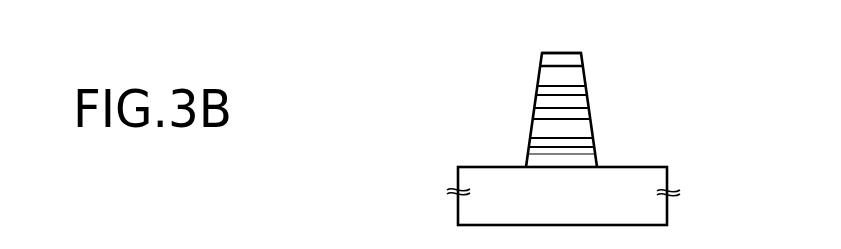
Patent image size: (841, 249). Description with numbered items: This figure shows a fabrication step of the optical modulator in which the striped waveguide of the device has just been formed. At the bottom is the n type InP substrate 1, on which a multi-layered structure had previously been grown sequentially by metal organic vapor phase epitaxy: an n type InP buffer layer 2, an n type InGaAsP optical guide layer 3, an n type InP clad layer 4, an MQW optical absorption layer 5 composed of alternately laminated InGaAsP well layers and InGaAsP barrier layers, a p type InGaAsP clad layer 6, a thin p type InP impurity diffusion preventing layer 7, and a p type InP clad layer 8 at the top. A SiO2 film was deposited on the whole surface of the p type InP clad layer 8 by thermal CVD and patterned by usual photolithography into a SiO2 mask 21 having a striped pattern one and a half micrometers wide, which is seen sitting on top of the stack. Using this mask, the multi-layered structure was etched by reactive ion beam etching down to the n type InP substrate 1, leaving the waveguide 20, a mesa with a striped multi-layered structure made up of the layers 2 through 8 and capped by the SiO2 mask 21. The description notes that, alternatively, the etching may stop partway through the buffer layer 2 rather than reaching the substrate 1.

The n type InP substrate 1 is at (666, 210).
The n type InP buffer layer 2 is at (524, 158).
The n type InGaAsP optical guide layer 3 is at (528, 143).
The n type InP clad layer 4 is at (532, 129).
The MQW optical absorption layer 5 is at (533, 118).
The p type InGaAsP clad layer 6 is at (535, 107).
The p type InP impurity diffusion preventing layer 7 is at (537, 93).
The p type InP clad layer 8 is at (540, 70).
The waveguide 20 is at (608, 49).
The SiO2 mask 21 is at (563, 60).